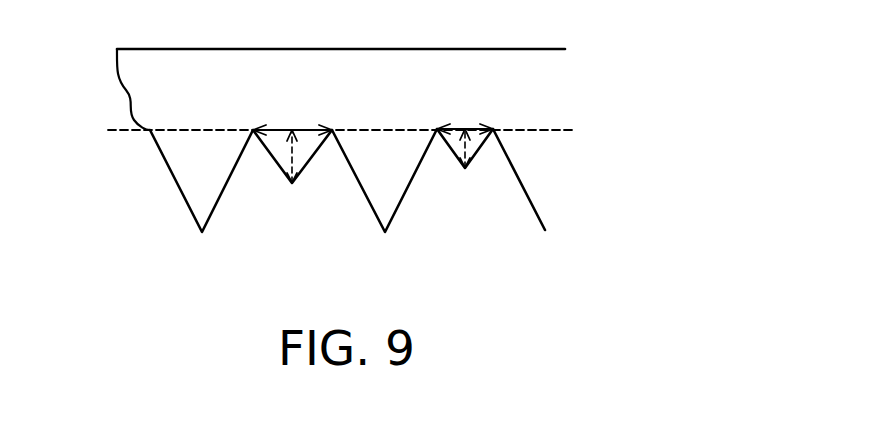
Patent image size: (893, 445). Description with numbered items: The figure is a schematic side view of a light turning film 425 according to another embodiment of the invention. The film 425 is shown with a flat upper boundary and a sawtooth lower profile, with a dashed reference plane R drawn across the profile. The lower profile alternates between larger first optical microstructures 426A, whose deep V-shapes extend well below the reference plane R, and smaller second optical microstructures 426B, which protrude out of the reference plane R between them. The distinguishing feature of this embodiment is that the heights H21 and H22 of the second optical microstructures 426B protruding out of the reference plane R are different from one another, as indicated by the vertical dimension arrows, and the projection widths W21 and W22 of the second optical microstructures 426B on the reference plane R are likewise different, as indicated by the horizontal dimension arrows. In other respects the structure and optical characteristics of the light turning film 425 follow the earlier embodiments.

The light turning film 425 is at (147, 80).
The first optical microstructures 426A is at (173, 182).
The second optical microstructures 426B is at (297, 175).
The projection width W21 is at (292, 112).
The projection width W22 is at (465, 111).
The height H21 is at (287, 153).
The height H22 is at (450, 156).
The reference plane R is at (542, 131).